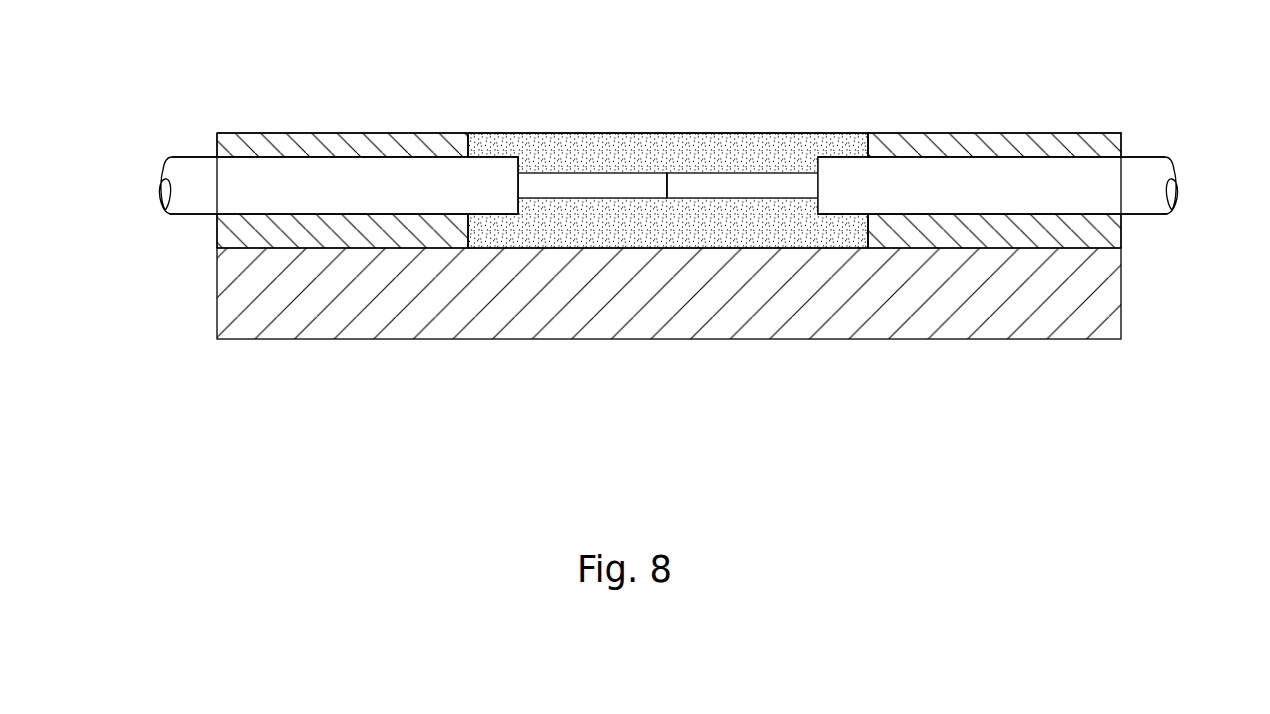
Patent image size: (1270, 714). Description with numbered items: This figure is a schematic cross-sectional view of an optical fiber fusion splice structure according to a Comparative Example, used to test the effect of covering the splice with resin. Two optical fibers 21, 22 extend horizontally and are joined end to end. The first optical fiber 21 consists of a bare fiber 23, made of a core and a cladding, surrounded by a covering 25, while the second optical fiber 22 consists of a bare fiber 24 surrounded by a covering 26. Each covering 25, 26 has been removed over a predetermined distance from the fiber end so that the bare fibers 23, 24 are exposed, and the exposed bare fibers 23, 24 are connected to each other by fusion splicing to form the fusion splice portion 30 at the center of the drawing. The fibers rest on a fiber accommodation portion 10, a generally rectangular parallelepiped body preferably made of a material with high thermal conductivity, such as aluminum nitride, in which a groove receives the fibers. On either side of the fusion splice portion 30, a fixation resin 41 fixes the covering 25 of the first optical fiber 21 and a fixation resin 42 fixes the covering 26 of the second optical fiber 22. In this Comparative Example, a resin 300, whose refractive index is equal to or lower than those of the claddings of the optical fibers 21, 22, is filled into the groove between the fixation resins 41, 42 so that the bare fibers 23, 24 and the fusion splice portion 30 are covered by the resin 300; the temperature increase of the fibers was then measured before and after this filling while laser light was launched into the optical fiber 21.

The fiber accommodation portion 10 is at (1121, 280).
The optical fiber 21 is at (178, 152).
The optical fiber 22 is at (1153, 137).
The bare fiber 23 is at (600, 182).
The bare fiber 24 is at (737, 182).
The covering 25 is at (390, 173).
The covering 26 is at (955, 172).
The fusion splice portion 30 is at (667, 167).
The fixation resin 41 is at (302, 138).
The fixation resin 42 is at (1045, 139).
The resin 300 is at (783, 148).